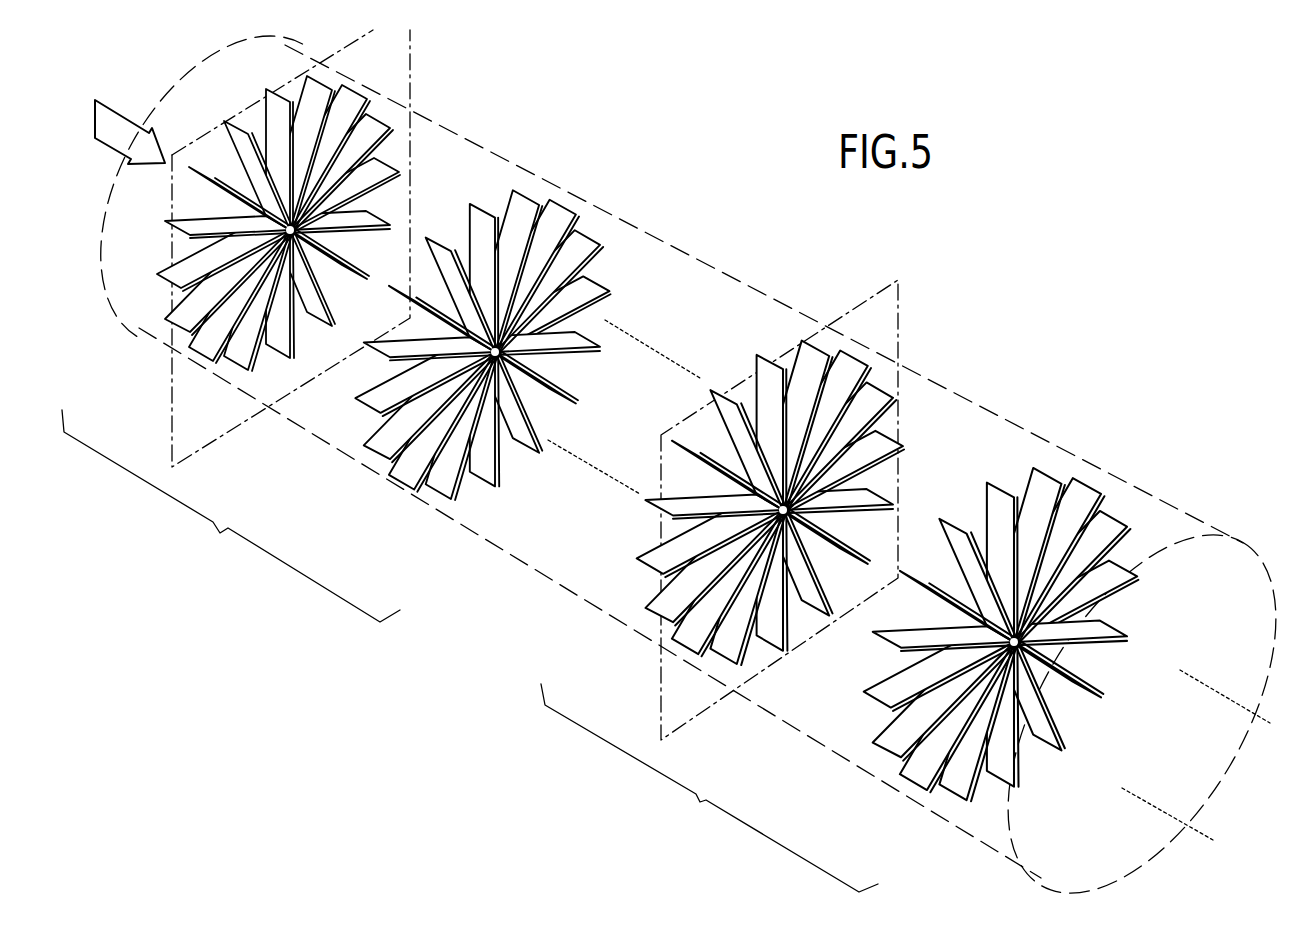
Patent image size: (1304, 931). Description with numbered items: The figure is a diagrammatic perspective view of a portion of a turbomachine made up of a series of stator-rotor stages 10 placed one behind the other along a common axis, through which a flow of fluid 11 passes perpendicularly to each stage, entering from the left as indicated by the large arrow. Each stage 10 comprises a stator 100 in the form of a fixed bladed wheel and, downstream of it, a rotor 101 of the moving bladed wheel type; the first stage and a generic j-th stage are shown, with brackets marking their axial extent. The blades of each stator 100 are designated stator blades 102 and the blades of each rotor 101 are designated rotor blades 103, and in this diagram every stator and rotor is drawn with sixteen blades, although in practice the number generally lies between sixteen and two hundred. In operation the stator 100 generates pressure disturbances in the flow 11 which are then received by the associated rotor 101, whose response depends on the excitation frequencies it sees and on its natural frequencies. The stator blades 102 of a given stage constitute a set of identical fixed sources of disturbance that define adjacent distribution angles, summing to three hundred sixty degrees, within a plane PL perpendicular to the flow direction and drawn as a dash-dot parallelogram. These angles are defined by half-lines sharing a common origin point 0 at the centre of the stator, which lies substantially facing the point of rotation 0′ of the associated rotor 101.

The flow of fluid 11 is at (130, 118).
The stator-rotor stage 10 is at (470, 651).
The stator 100 is at (753, 407).
The rotor 101 is at (510, 230).
The stator blades 102 is at (387, 167).
The rotor blades 103 is at (583, 270).
The origin point 0 is at (293, 238).
The point of rotation 0′ is at (498, 360).
The plane PL is at (661, 684).